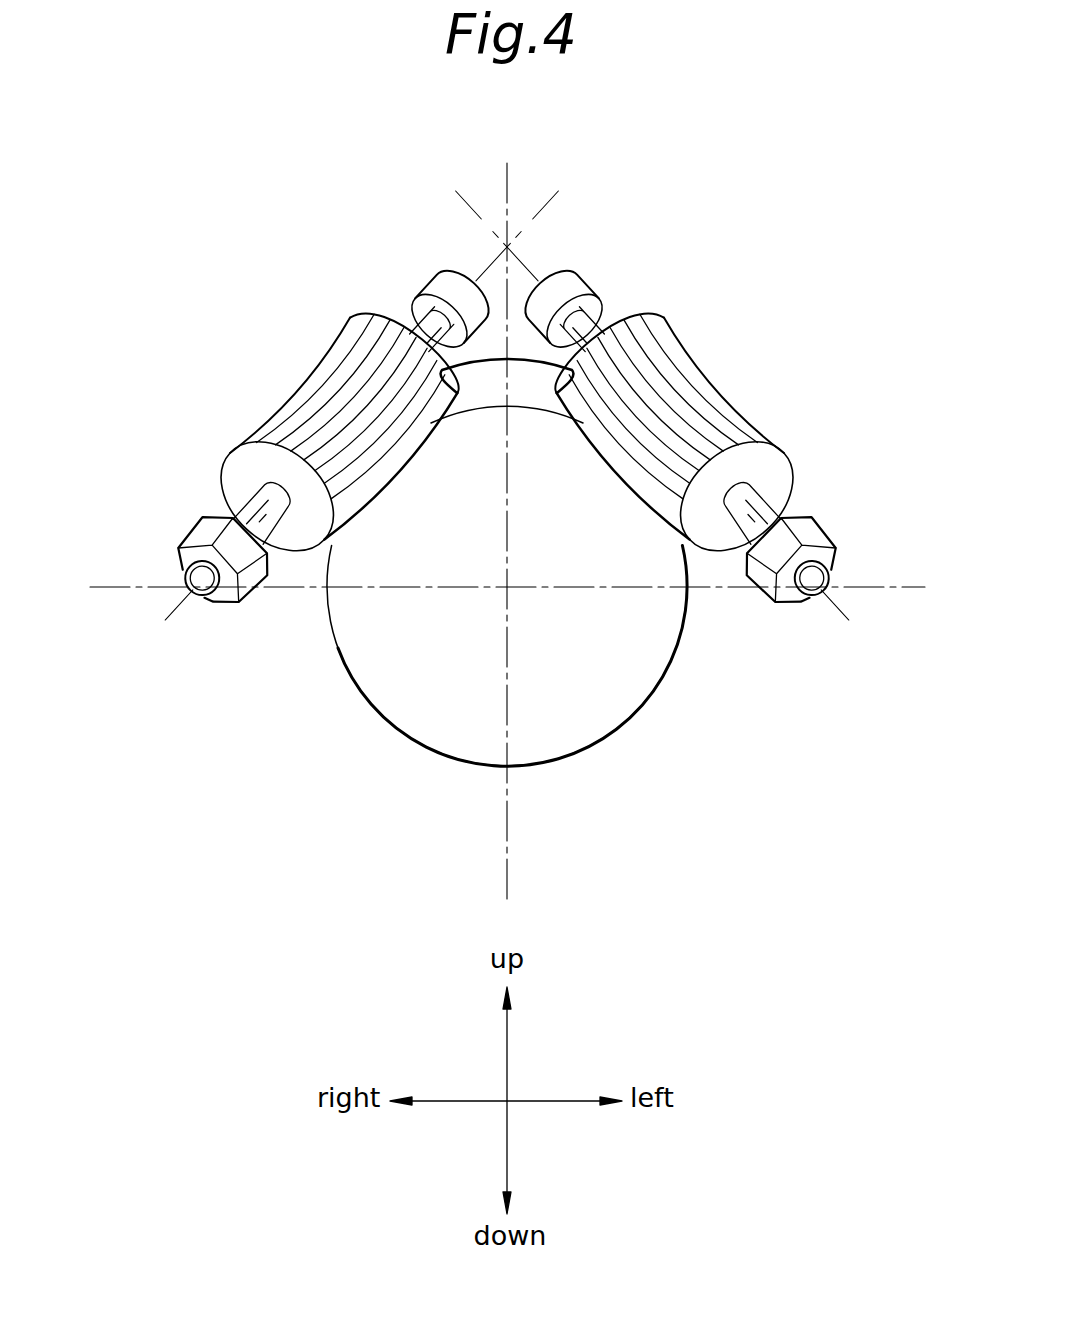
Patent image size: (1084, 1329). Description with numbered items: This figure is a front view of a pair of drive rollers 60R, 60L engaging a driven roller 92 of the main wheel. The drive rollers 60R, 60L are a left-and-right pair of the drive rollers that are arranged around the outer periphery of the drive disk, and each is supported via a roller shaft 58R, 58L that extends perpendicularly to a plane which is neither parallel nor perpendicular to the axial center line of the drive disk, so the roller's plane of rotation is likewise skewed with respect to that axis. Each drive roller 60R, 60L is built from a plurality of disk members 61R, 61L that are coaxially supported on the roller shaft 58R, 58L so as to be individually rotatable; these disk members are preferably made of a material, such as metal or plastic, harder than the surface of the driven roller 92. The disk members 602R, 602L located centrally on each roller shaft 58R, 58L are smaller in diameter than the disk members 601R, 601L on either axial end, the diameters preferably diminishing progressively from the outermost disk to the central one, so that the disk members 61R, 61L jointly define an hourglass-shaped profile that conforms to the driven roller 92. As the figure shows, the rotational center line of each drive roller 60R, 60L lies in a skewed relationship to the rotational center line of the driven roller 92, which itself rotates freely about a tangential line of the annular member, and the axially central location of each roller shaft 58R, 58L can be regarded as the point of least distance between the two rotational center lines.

The drive roller 60R is at (283, 407).
The drive roller 60L is at (724, 416).
The disk member 601R is at (365, 312).
The disk member 601L is at (650, 312).
The disk member 61R is at (312, 326).
The disk member 61L is at (702, 325).
The disk member 602R is at (313, 397).
The disk member 602L is at (702, 390).
The roller shaft 58R is at (228, 491).
The roller shaft 58L is at (790, 491).
The driven roller 92 is at (614, 732).